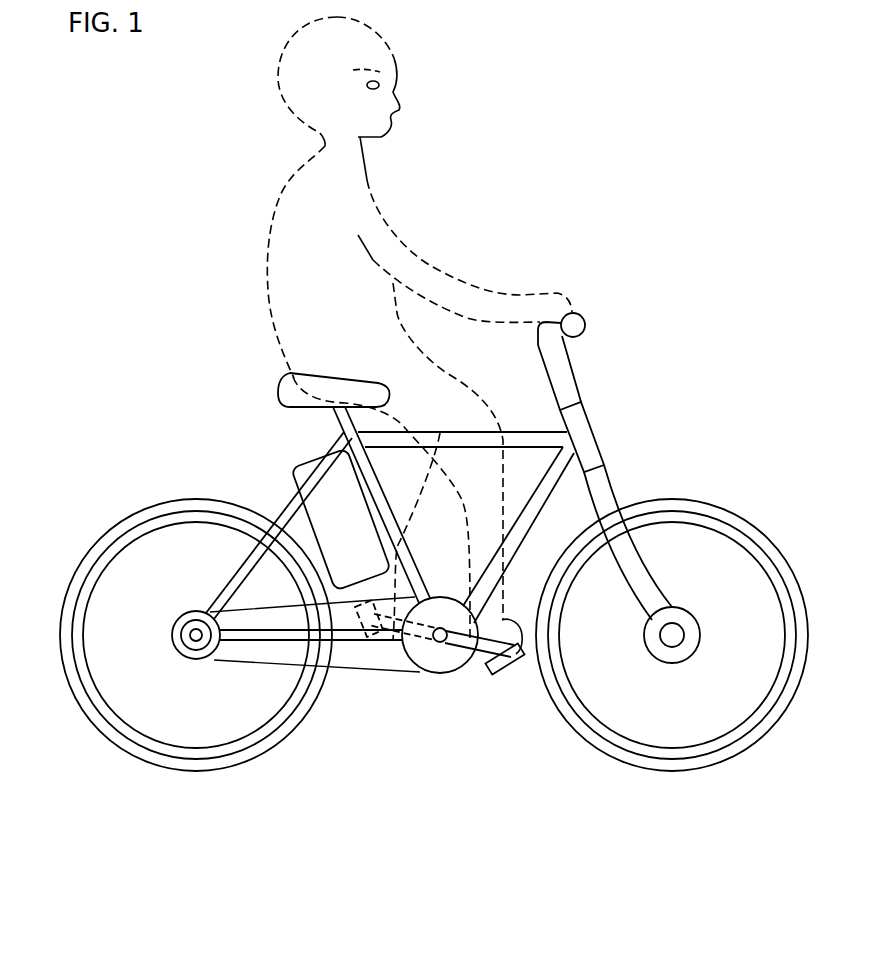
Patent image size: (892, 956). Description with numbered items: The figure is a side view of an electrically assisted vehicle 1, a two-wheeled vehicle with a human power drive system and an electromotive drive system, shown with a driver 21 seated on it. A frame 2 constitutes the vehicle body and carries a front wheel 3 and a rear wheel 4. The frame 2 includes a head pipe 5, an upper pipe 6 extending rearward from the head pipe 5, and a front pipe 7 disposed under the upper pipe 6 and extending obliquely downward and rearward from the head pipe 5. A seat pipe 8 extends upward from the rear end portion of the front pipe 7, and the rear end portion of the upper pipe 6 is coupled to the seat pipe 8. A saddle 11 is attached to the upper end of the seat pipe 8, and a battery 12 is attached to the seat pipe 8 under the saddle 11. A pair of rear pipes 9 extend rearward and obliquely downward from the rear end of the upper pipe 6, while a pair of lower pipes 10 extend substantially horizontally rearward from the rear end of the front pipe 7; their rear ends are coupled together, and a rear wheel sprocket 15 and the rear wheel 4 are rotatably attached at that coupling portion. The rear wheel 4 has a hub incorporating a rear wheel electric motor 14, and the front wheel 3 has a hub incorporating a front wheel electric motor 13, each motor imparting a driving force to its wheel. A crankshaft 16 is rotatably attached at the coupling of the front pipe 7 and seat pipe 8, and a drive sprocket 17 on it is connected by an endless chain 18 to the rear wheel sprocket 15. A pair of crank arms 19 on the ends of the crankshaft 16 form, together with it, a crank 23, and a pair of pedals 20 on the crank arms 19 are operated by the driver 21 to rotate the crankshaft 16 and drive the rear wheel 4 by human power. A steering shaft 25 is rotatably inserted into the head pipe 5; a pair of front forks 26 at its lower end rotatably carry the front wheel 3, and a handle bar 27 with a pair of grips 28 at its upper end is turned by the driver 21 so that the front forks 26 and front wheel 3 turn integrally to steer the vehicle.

The electrically assisted vehicle 1 is at (509, 213).
The frame 2 is at (520, 418).
The front wheel 3 is at (760, 537).
The rear wheel 4 is at (112, 537).
The head pipe 5 is at (592, 435).
The upper pipe 6 is at (445, 432).
The front pipe 7 is at (535, 500).
The seat pipe 8 is at (372, 488).
The rear pipes 9 is at (240, 576).
The lower pipes 10 is at (252, 641).
The saddle 11 is at (290, 388).
The battery 12 is at (298, 473).
The front wheel electric motor 13 is at (677, 607).
The rear wheel electric motor 14 is at (192, 658).
The rear wheel sprocket 15 is at (173, 622).
The crankshaft 16 is at (438, 643).
The drive sprocket 17 is at (410, 664).
The chain 18 is at (340, 668).
The crank arms 19 is at (462, 672).
The pedals 20 is at (520, 658).
The driver 21 is at (278, 66).
The crank 23 is at (422, 768).
The steering shaft 25 is at (568, 385).
The front forks 26 is at (640, 590).
The handle bar 27 is at (562, 333).
The grips 28 is at (585, 325).